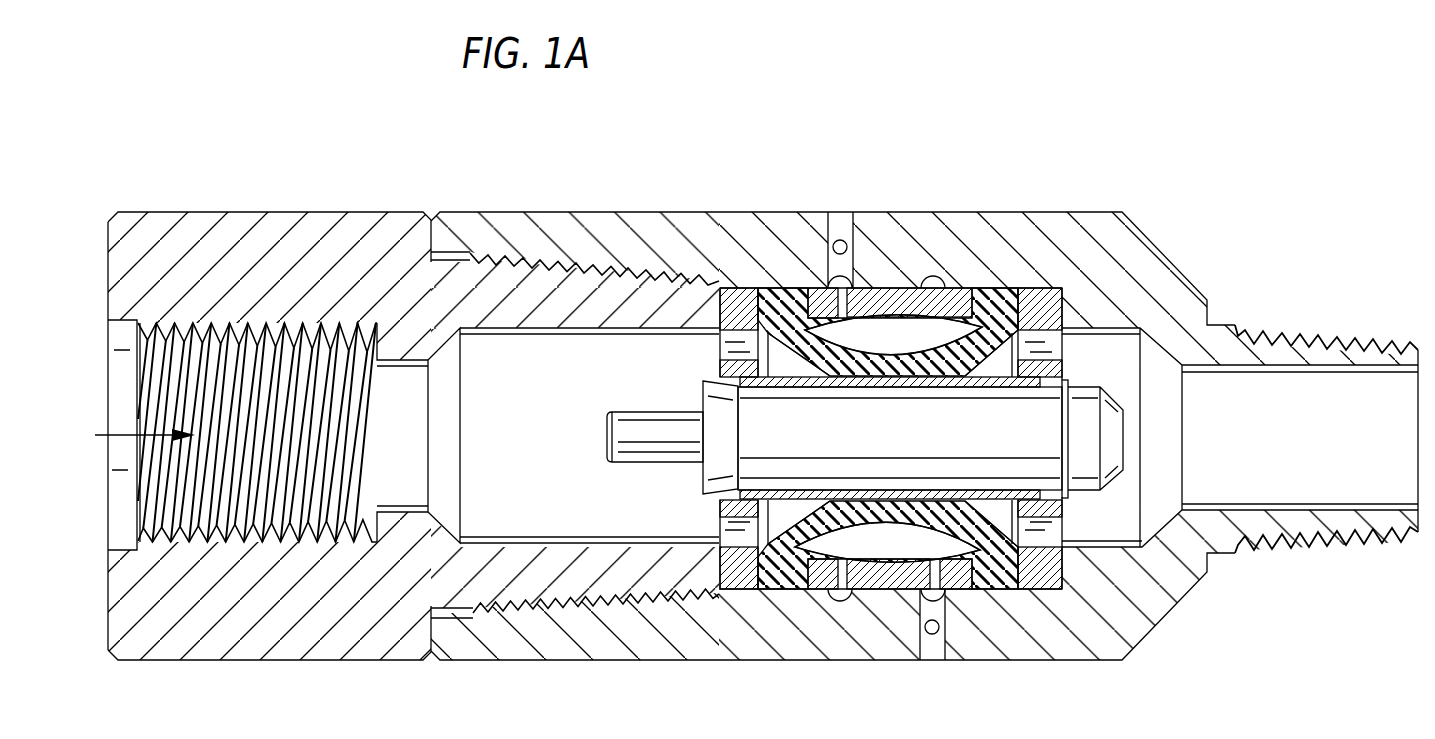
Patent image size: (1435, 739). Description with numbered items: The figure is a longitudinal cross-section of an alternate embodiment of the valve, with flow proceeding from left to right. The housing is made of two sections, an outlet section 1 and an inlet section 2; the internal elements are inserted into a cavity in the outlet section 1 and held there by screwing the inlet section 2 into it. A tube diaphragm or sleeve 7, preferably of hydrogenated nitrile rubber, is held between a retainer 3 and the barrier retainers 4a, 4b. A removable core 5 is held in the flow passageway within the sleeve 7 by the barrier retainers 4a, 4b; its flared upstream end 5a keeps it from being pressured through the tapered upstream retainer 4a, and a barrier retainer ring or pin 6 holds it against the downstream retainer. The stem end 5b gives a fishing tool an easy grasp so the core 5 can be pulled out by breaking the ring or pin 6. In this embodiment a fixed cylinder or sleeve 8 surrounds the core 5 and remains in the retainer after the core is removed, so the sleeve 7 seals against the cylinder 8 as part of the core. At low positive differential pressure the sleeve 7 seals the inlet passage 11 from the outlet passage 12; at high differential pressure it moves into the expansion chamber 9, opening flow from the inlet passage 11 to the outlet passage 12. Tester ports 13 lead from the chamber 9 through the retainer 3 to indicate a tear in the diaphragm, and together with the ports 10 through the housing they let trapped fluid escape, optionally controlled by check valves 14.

The outlet section 1 is at (947, 212).
The inlet section 2 is at (278, 212).
The retainer 3 is at (882, 552).
The barrier retainer 4a is at (720, 514).
The barrier retainer 4b is at (1062, 533).
The removable core 5 is at (1123, 430).
The flared upstream end 5a is at (713, 378).
The stem end 5b is at (622, 410).
The barrier retainer ring or pin 6 is at (1063, 380).
The tube diaphragm or sleeve 7 is at (885, 354).
The fixed cylinder or sleeve 8 is at (719, 288).
The chamber 9 is at (913, 540).
The ports 10 is at (932, 655).
The inlet passage 11 is at (270, 495).
The outlet passage 12 is at (1306, 480).
The tester ports 13 is at (826, 285).
The check valves 14 is at (838, 238).